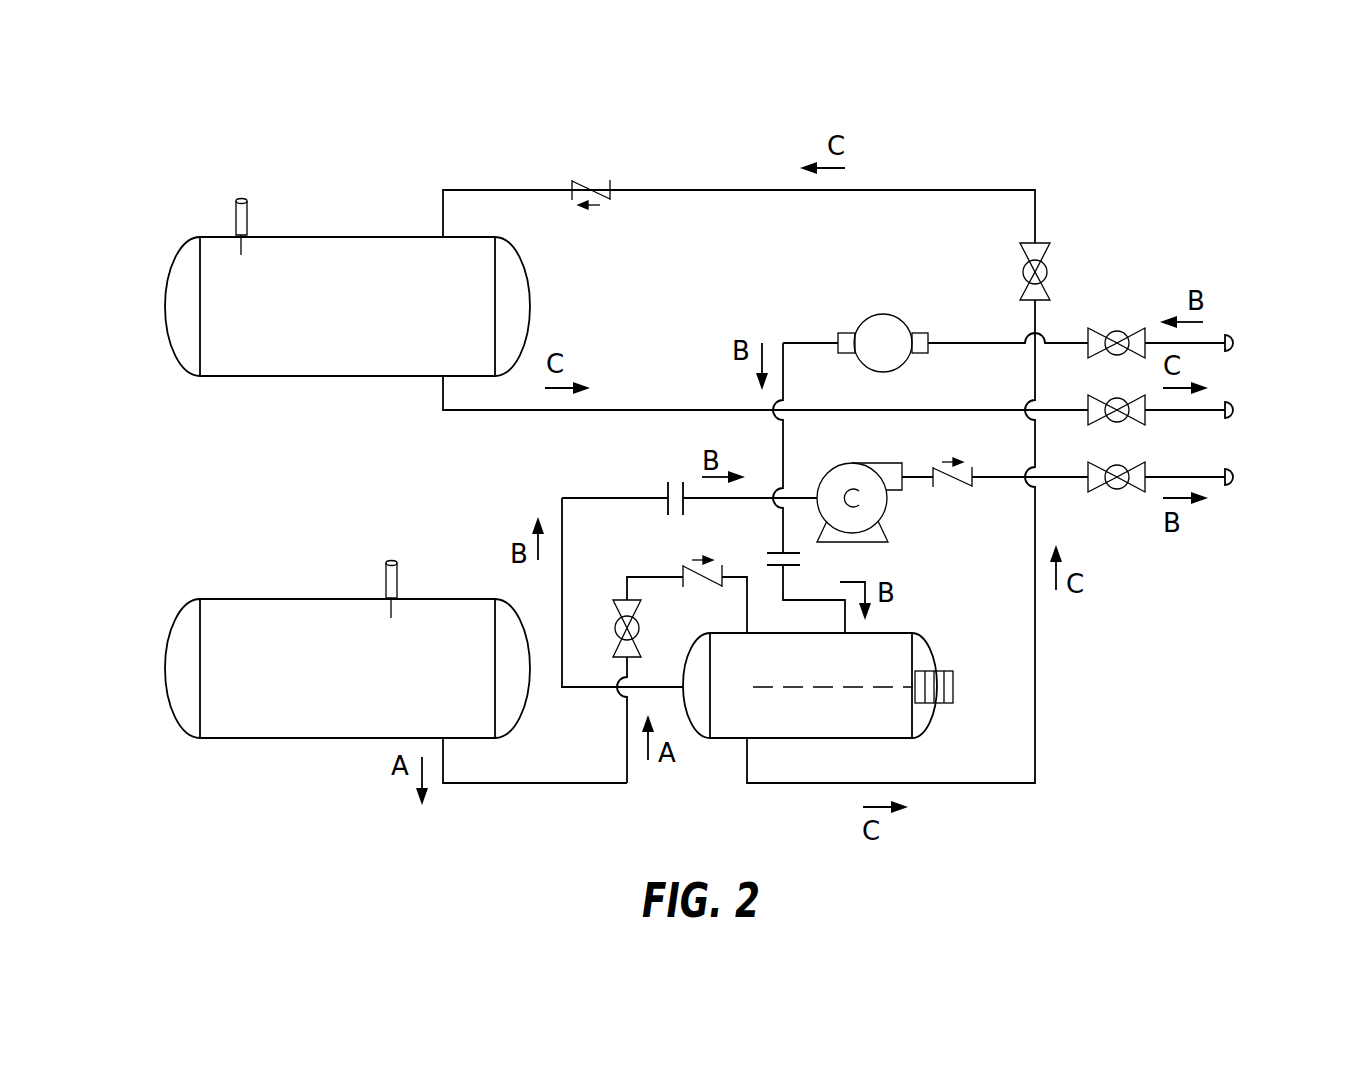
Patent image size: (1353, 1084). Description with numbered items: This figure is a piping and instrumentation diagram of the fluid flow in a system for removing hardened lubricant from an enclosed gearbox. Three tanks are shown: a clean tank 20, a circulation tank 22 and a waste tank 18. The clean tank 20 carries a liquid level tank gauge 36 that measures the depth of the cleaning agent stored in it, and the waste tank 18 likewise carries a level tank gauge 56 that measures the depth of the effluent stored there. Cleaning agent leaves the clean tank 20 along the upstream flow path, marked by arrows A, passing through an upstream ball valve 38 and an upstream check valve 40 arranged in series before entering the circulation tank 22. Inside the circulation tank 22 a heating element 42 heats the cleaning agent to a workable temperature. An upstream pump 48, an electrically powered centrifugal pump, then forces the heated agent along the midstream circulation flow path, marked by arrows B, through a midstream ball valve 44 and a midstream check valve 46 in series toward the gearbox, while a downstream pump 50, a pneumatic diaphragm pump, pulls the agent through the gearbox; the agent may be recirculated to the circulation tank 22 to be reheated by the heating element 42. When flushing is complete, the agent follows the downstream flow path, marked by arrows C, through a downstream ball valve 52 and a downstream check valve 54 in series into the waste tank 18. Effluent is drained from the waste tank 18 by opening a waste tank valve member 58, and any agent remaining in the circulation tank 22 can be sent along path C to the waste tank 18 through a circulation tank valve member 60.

The waste tank 18 is at (370, 302).
The clean tank 20 is at (370, 665).
The circulation tank 22 is at (833, 673).
The liquid level tank gauge 36 is at (388, 577).
The upstream ball valve 38 is at (613, 628).
The upstream check valve 40 is at (687, 567).
The heating element 42 is at (885, 688).
The midstream ball valve 44 is at (1117, 490).
The midstream check valve 46 is at (957, 487).
The upstream pump 48 is at (875, 512).
The downstream pump 50 is at (865, 320).
The downstream ball valve 52 is at (1114, 329).
The downstream check valve 54 is at (590, 183).
The level tank gauge 56 is at (388, 215).
The waste tank valve member 58 is at (1119, 423).
The circulation tank valve member 60 is at (1047, 268).